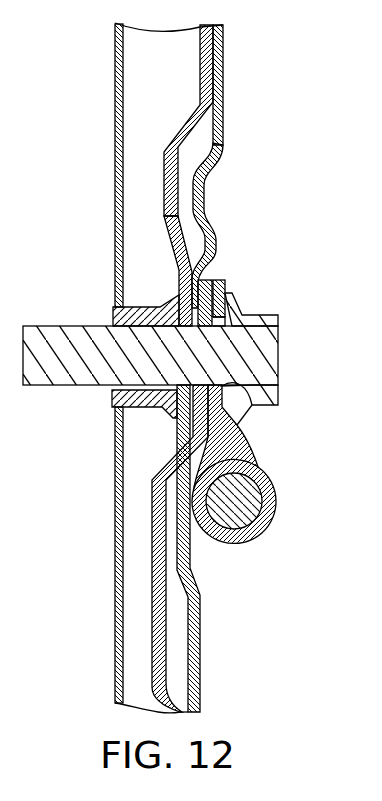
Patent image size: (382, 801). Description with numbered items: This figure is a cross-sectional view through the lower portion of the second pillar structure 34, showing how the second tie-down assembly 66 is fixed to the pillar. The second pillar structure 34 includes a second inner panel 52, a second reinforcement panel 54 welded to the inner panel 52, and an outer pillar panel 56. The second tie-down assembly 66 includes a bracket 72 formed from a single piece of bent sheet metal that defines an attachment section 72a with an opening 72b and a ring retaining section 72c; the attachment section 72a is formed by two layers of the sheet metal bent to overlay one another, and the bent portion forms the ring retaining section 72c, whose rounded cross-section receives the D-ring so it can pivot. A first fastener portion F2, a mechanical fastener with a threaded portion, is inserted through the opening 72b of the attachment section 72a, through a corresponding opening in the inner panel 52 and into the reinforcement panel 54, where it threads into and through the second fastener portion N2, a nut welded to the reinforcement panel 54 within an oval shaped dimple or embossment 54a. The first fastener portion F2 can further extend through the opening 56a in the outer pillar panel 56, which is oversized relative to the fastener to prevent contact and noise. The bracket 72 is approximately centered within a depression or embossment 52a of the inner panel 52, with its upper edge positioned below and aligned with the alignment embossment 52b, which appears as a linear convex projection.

The second pillar structure 34 is at (233, 86).
The second inner panel 52 is at (222, 146).
The embossment 52a is at (191, 552).
The alignment embossment 52b is at (218, 242).
The second reinforcement panel 54 is at (200, 68).
The embossment 54a is at (178, 287).
The outer pillar panel 56 is at (115, 101).
The opening 56a is at (116, 450).
The second tie-down assembly 66 is at (283, 473).
The bracket 72 is at (216, 287).
The attachment section 72a is at (218, 308).
The opening 72b is at (253, 407).
The ring retaining section 72c is at (260, 528).
The first fastener portion F2 is at (279, 370).
The second fastener portion N2 is at (145, 312).